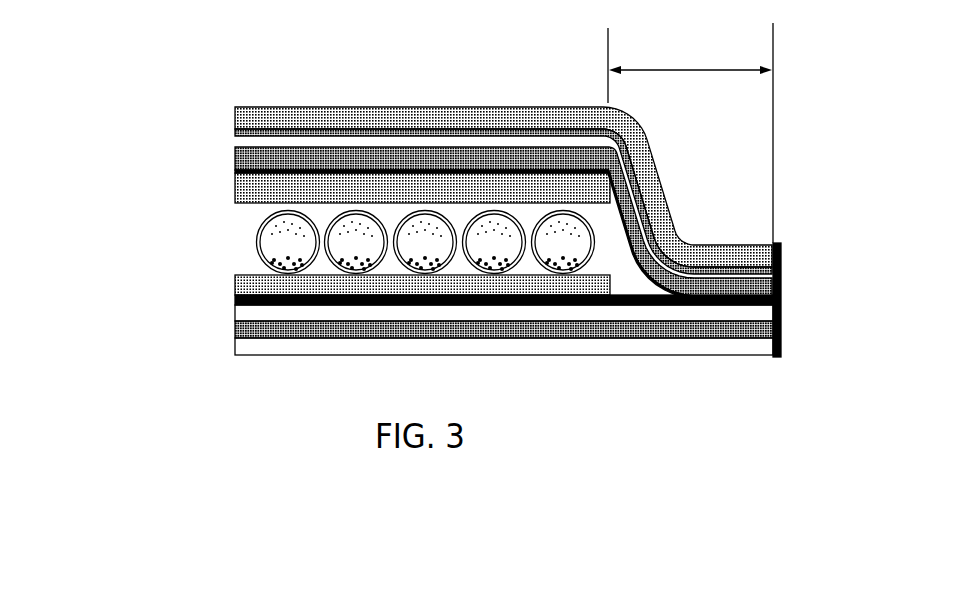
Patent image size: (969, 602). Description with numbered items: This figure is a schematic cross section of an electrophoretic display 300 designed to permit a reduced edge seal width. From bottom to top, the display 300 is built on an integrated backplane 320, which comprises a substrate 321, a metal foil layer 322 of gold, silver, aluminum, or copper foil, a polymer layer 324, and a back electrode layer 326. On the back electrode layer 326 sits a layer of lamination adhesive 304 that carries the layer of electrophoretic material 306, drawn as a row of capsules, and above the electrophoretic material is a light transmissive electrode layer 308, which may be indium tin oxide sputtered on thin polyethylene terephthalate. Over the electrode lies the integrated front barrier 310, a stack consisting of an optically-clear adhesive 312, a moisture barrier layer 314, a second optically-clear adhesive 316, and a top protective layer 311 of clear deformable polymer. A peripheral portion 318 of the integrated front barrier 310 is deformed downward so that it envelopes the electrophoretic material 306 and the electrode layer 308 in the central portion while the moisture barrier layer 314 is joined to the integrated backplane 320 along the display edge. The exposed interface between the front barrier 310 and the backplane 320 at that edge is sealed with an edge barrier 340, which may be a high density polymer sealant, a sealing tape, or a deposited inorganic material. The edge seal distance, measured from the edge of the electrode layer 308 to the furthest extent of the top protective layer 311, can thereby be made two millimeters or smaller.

The electrophoretic display 300 is at (350, 58).
The top protective layer 311 is at (275, 115).
The second optically-clear adhesive 316 is at (237, 133).
The moisture barrier layer 314 is at (236, 141).
The optically-clear adhesive 312 is at (237, 158).
The light transmissive electrode layer 308 is at (240, 185).
The layer of electrophoretic material 306 is at (270, 242).
The layer of lamination adhesive 304 is at (240, 285).
The back electrode layer 326 is at (238, 299).
The polymer layer 324 is at (243, 313).
The metal foil layer 322 is at (240, 335).
The substrate 321 is at (318, 348).
The integrated front barrier 310 is at (458, 157).
The integrated backplane 320 is at (466, 359).
The edge barrier 340 is at (783, 358).
The peripheral portion 318 is at (780, 405).